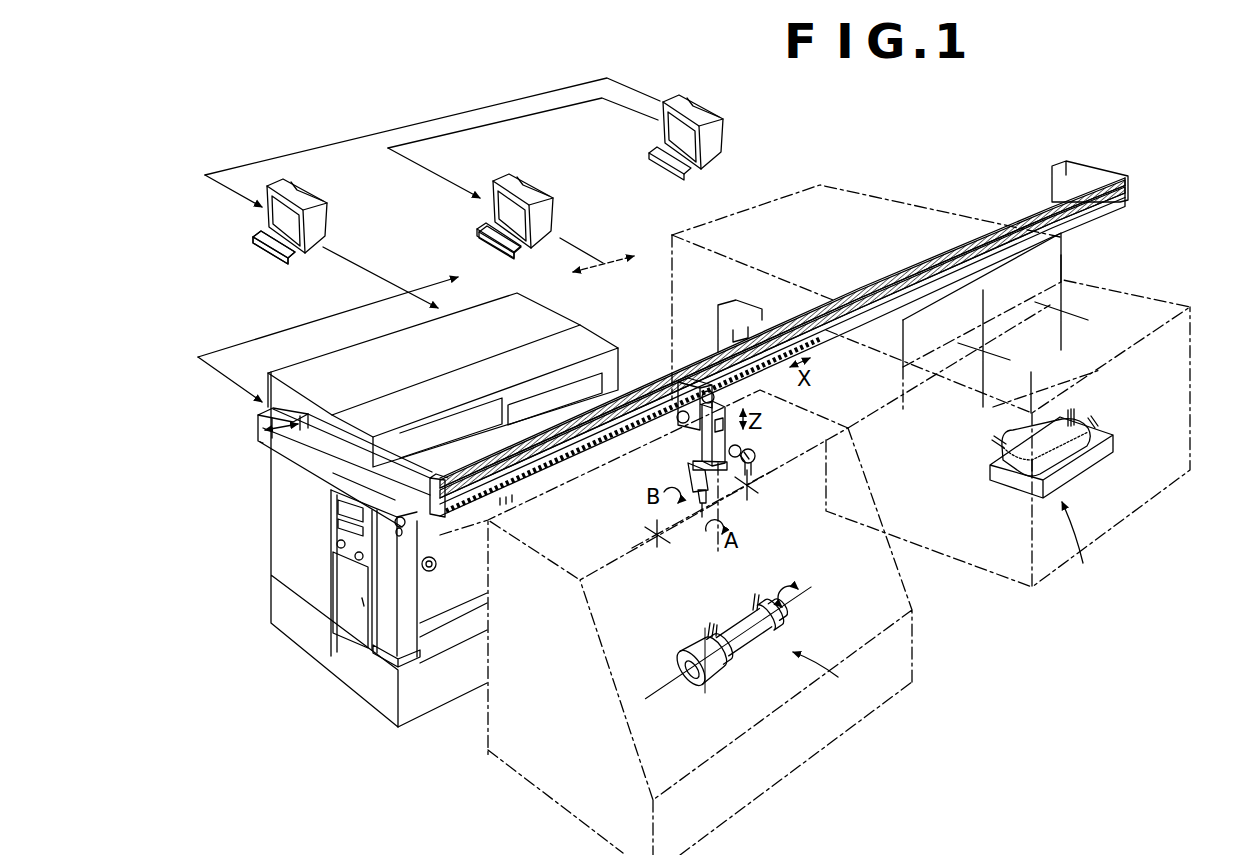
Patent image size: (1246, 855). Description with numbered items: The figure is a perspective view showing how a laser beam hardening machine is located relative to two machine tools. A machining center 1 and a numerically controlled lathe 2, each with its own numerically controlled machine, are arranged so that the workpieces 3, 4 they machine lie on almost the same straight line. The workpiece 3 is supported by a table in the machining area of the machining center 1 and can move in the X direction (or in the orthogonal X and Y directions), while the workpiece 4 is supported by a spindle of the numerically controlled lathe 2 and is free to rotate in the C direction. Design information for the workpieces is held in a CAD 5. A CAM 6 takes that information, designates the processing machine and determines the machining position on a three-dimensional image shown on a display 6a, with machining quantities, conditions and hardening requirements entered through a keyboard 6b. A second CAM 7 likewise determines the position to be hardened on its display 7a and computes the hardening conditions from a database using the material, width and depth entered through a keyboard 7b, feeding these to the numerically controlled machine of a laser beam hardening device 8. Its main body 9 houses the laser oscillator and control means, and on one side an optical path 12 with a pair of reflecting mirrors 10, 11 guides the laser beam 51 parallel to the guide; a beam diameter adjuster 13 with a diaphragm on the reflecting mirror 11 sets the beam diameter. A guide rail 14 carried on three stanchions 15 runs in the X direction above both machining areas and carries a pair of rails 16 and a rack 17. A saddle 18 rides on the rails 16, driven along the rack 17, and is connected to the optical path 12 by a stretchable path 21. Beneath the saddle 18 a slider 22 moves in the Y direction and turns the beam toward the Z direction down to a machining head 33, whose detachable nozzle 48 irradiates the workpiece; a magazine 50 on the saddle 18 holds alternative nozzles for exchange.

The machining center 1 is at (1190, 375).
The numerically controlled lathe 2 is at (892, 573).
The workpiece 3 is at (1075, 448).
The workpiece 4 is at (747, 647).
The CAD 5 is at (742, 146).
The CAM 6 is at (529, 196).
The display 6a is at (566, 216).
The keyboard 6b is at (482, 228).
The CAM 7 is at (309, 215).
The display 7a is at (340, 233).
The keyboard 7b is at (270, 253).
The laser beam hardening device 8 is at (411, 508).
The main body 9 is at (565, 318).
The reflecting mirror 10 is at (262, 430).
The reflecting mirror 11 is at (400, 517).
The optical path 12 is at (283, 453).
The beam diameter adjuster 13 is at (396, 530).
The guide rail 14 is at (777, 347).
The stanchions 15 is at (1083, 168).
The rails 16 is at (922, 278).
The rack 17 is at (952, 268).
The saddle 18 is at (697, 377).
The stretchable path 21 is at (574, 462).
The slider 22 is at (691, 448).
The machining head 33 is at (687, 470).
The nozzle 48 is at (698, 507).
The magazine 50 is at (752, 444).
The laser beam 51 is at (332, 475).